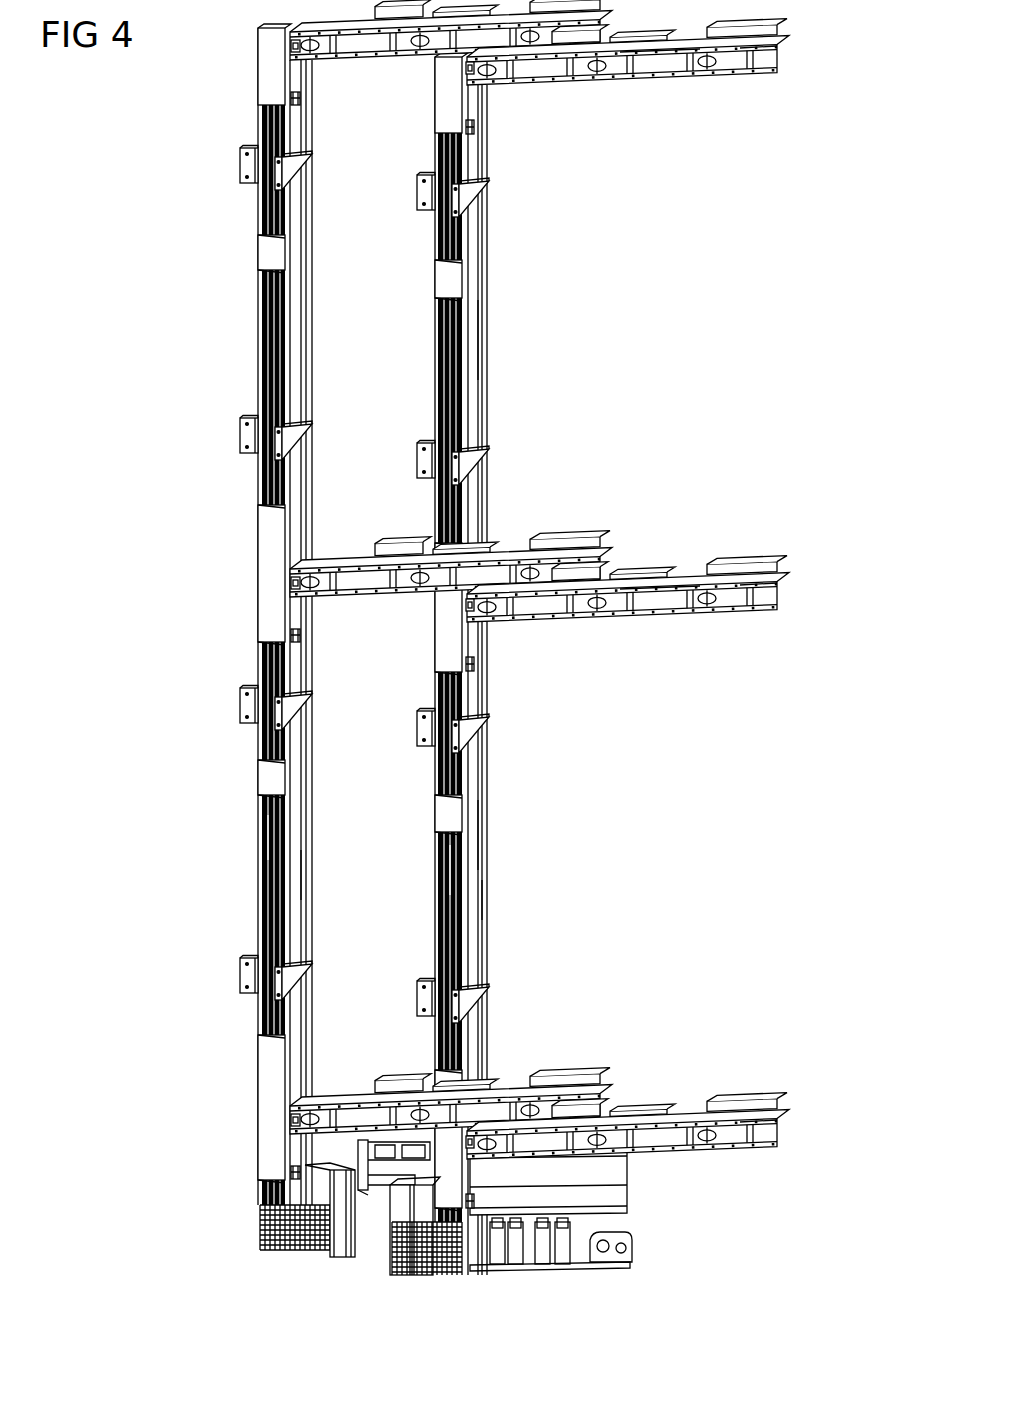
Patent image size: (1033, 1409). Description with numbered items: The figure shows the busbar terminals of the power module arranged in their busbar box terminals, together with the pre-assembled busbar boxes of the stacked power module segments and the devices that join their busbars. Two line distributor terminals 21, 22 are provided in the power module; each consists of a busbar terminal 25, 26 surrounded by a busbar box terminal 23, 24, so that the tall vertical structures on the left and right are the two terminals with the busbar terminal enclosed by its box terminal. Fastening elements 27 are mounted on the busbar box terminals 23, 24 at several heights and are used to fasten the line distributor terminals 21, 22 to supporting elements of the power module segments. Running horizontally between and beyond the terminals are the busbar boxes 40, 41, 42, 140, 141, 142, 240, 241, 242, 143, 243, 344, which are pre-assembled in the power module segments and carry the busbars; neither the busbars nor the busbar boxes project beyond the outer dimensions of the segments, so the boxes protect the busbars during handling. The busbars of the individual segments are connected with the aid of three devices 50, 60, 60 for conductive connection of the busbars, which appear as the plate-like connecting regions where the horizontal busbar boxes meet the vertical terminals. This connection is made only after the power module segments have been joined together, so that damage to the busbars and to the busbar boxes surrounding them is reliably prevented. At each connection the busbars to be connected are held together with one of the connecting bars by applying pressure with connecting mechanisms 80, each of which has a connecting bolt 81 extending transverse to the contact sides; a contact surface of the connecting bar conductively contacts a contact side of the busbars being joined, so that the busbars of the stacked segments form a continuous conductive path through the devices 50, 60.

The line distributor terminal 21 is at (240, 313).
The line distributor terminal 22 is at (507, 291).
The busbar box terminal 23 is at (297, 874).
The busbar box terminal 24 is at (473, 901).
The busbar terminal 25 is at (275, 841).
The busbar terminal 26 is at (447, 870).
The fastening element 27 is at (241, 175).
The busbar box 40 is at (536, 88).
The busbar box 41 is at (679, 66).
The busbar box 42 is at (763, 72).
The device for conductive connection of the busbars 50 is at (272, 75).
The device for conductive connection of the busbars 60 is at (272, 574).
The connecting mechanism 80 is at (300, 46).
The connecting bolt 81 is at (470, 635).
The busbar box 140 is at (560, 625).
The busbar box 141 is at (678, 606).
The busbar box 142 is at (765, 608).
The busbar box 143 is at (474, 343).
The busbar box 240 is at (548, 1148).
The busbar box 241 is at (685, 1143).
The busbar box 242 is at (760, 1145).
The busbar box 243 is at (473, 838).
The busbar box 344 is at (470, 1263).